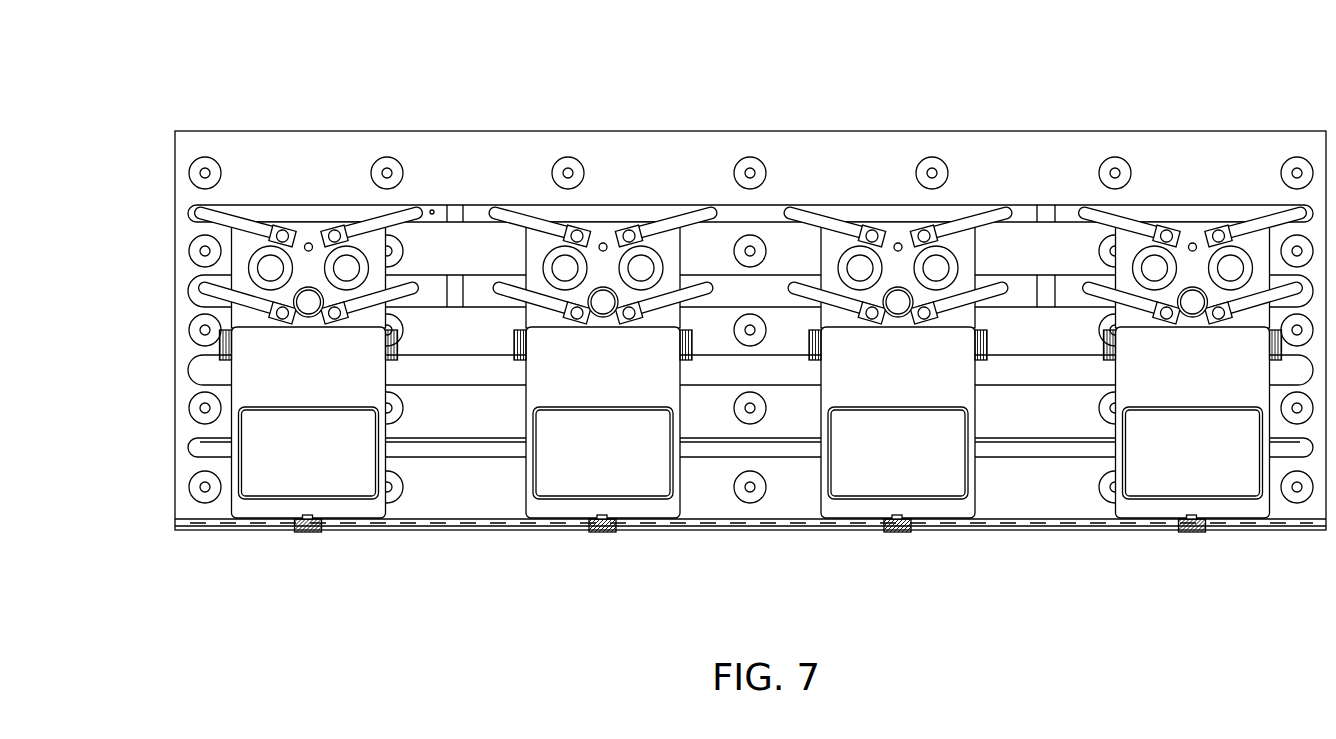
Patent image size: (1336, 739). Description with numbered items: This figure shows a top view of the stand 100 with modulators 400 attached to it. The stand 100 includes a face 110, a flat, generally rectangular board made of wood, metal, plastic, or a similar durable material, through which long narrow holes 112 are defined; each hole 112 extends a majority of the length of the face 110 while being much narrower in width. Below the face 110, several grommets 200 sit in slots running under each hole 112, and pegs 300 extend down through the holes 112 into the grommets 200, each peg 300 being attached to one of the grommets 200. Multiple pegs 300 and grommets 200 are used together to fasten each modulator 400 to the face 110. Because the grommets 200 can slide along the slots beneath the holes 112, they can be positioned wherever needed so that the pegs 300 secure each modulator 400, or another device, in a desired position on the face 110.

The stand 100 is at (700, 323).
The face 110 is at (725, 160).
The holes 112 is at (751, 173).
The grommets 200 is at (432, 291).
The pegs 300 is at (248, 300).
The modulators 400 is at (294, 468).